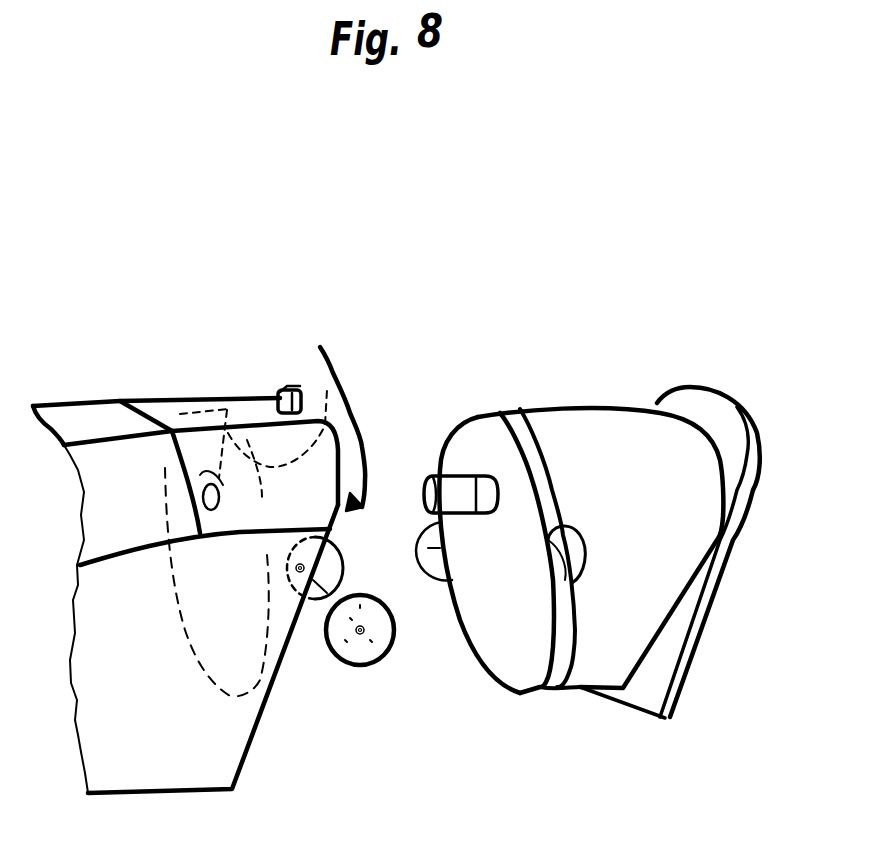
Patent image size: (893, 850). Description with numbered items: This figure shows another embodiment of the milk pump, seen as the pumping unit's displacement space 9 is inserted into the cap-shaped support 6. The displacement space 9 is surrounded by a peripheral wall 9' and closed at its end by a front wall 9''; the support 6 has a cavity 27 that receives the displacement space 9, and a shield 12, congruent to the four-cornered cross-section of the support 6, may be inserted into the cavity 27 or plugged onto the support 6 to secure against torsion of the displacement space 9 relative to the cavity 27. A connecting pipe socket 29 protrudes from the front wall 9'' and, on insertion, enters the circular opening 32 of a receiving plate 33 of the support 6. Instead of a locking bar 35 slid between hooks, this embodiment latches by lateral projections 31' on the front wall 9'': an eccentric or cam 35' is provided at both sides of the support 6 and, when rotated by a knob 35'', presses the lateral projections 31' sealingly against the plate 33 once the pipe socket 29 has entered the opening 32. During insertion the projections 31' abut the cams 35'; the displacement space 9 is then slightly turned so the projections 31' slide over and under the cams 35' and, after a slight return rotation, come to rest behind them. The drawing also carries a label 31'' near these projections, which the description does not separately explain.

The cap-shaped support 6 is at (175, 413).
The cavity 27 is at (288, 354).
The circular opening 32 is at (228, 387).
The locking bar 35 is at (331, 429).
The eccentric or cam 35' is at (349, 564).
The knob 35'' is at (388, 638).
The receiving plate 33 is at (267, 630).
The connecting pipe socket 29 is at (450, 490).
The front wall 9'' is at (493, 465).
The peripheral wall 9' is at (547, 456).
The displacement space 9 is at (600, 473).
The shield 12 is at (709, 413).
The projection 31'' is at (439, 577).
The lateral projections 31' is at (588, 554).